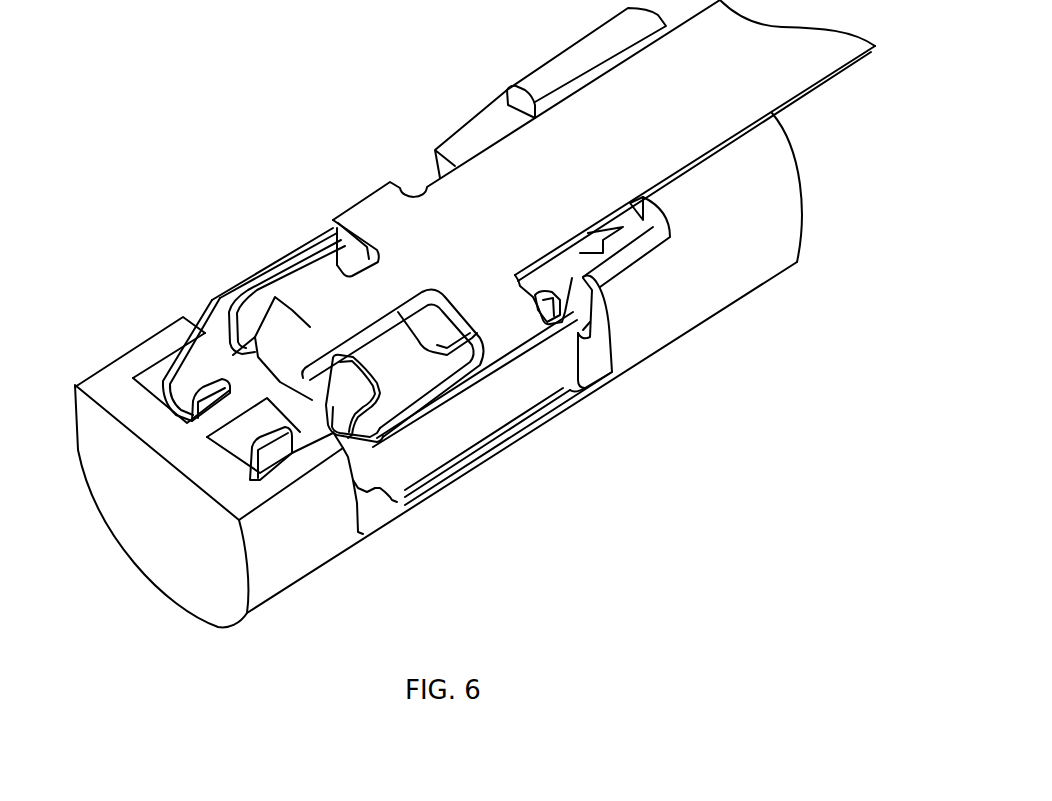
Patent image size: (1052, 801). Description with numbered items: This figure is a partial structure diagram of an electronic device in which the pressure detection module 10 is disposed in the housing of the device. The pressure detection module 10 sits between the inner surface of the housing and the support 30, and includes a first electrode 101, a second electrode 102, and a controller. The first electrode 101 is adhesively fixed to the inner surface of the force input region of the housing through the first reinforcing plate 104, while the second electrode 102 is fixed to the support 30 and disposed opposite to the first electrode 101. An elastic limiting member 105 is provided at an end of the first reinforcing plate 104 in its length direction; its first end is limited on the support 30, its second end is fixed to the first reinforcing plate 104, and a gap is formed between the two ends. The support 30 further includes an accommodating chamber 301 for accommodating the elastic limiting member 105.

The pressure detection module 10 is at (200, 107).
The support 30 is at (300, 548).
The accommodating chamber 301 is at (150, 378).
The first electrode 101 is at (297, 265).
The second electrode 102 is at (333, 263).
The first reinforcing plate 104 is at (233, 293).
The elastic limiting member 105 is at (198, 392).